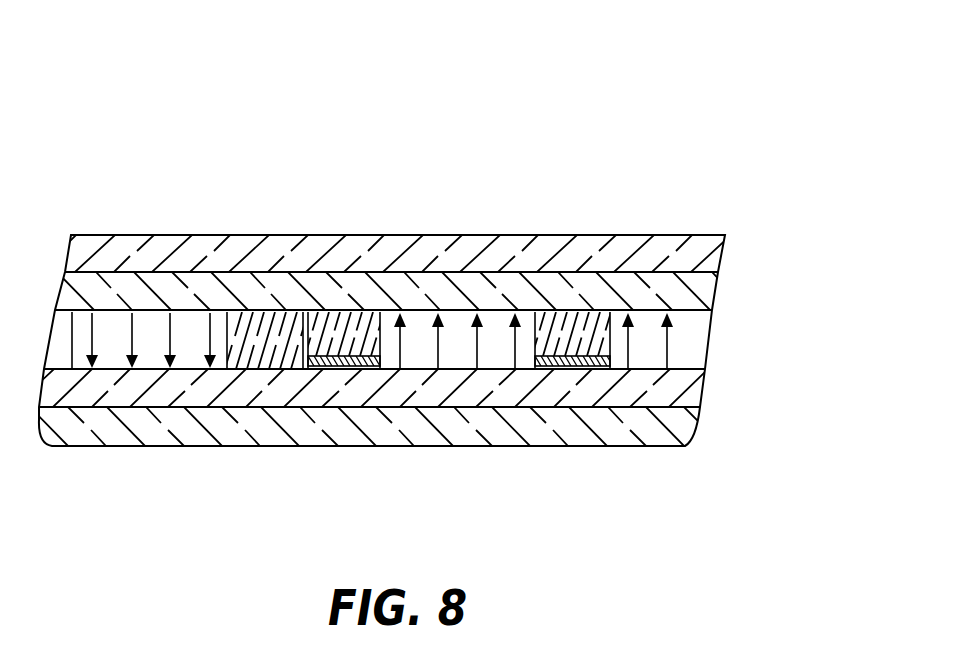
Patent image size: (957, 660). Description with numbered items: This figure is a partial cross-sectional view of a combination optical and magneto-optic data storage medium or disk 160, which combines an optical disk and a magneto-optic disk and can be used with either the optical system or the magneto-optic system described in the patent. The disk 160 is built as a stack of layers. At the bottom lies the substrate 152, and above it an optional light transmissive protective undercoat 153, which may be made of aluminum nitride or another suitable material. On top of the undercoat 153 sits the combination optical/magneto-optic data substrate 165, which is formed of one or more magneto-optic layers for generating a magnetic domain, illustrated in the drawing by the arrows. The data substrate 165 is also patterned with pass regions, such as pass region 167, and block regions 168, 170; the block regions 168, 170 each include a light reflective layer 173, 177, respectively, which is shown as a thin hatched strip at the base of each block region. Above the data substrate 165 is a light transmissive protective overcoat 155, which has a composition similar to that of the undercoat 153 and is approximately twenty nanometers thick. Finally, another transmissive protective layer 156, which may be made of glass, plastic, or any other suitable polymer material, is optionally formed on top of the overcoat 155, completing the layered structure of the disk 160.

The data storage medium or disk 160 is at (620, 155).
The transmissive protective layer 156 is at (722, 242).
The light transmissive protective overcoat 155 is at (708, 288).
The combination optical/magneto-optic data substrate 165 is at (708, 338).
The light transmissive protective undercoat 153 is at (705, 378).
The substrate 152 is at (698, 421).
The pass region 167 is at (263, 325).
The block region 168 is at (348, 325).
The block region 170 is at (555, 327).
The light reflective layer 173 is at (357, 358).
The light reflective layer 177 is at (575, 357).